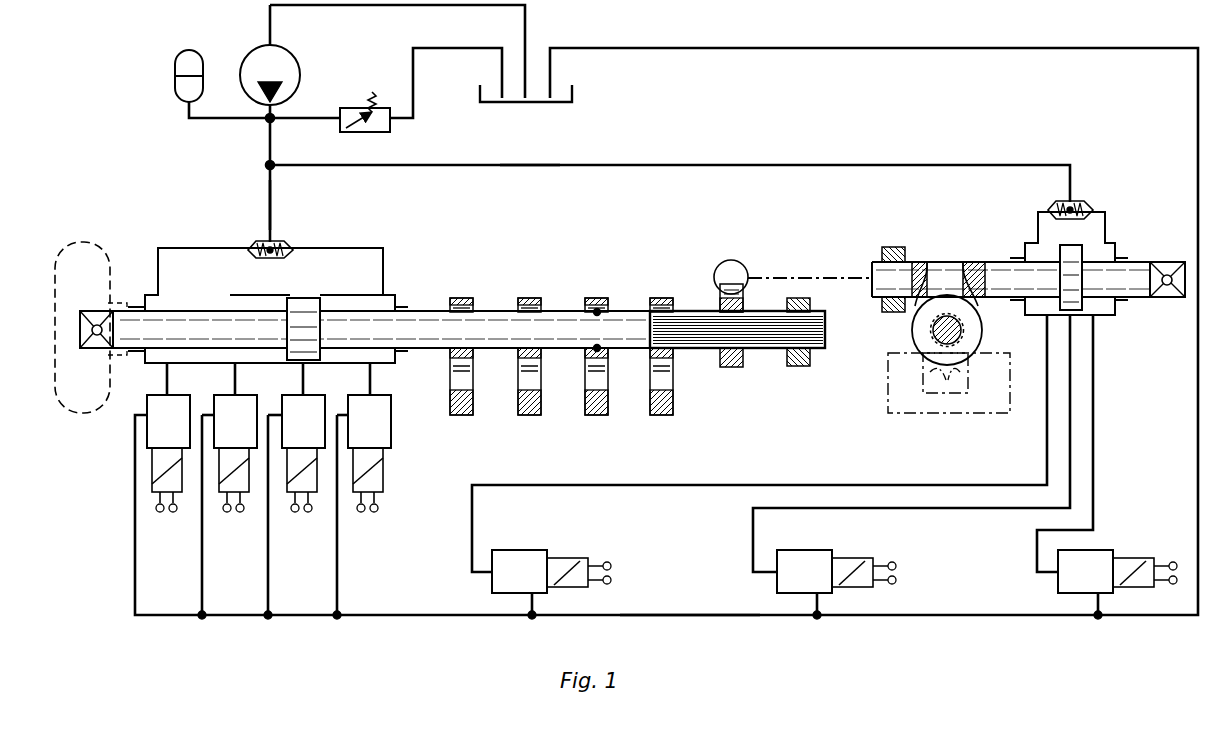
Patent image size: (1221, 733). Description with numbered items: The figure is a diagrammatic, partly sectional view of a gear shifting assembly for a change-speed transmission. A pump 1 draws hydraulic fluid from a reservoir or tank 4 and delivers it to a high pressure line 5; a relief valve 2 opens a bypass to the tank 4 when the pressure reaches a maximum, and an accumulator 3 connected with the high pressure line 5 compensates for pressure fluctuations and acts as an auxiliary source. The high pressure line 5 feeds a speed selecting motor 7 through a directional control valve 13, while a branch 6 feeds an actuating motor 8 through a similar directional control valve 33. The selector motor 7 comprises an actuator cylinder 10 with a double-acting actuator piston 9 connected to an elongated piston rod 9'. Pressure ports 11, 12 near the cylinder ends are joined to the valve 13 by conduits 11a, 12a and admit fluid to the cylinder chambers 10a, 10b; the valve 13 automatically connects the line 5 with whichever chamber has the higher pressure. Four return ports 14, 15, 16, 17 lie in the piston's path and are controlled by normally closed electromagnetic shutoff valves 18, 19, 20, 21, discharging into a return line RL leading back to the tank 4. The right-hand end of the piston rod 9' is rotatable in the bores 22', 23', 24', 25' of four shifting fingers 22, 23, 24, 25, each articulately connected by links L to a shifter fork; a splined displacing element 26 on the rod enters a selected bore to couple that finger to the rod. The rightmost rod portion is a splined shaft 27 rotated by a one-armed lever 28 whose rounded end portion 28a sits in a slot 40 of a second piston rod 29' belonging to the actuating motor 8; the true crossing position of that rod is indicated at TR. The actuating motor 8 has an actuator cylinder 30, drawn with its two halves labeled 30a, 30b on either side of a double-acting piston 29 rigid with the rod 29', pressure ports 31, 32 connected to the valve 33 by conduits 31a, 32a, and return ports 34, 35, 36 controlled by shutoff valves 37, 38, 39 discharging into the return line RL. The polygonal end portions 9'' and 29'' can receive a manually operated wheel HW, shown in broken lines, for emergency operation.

The pump 1 is at (288, 66).
The relief valve 2 is at (382, 128).
The accumulator 3 is at (172, 88).
The reservoir or tank 4 is at (572, 94).
The high pressure line 5 is at (268, 192).
The branch of the high pressure line 6 is at (504, 168).
The speed selecting motor 7 is at (150, 240).
The shifting or actuating motor 8 is at (1132, 214).
The actuator piston 9 is at (381, 312).
The piston rod 9' is at (195, 294).
The left-hand end portion of the piston rod 9'' is at (103, 316).
The actuator cylinder 10 is at (138, 362).
The cylinder chamber 10a is at (238, 300).
The cylinder chamber 10b is at (342, 300).
The pressure port 11 is at (156, 282).
The conduit 11a is at (190, 248).
The pressure port 12 is at (384, 288).
The conduit 12a is at (354, 248).
The directional control valve 13 is at (286, 243).
The return port 14 is at (165, 374).
The return port 15 is at (233, 378).
The return port 16 is at (301, 378).
The return port 17 is at (368, 378).
The electromagnetic shutoff valve 18 is at (172, 406).
The electromagnetic shutoff valve 19 is at (240, 406).
The electromagnetic shutoff valve 20 is at (310, 406).
The electromagnetic shutoff valve 21 is at (378, 406).
The shifting member or finger 22 is at (459, 396).
The bore 22' is at (448, 292).
The shifting member or finger 23 is at (528, 396).
The bore 23' is at (514, 292).
The shifting member or finger 24 is at (597, 396).
The bore 24' is at (615, 292).
The shifting member or finger 25 is at (664, 396).
The bore 25' is at (657, 290).
The coupling or displacing element 26 is at (590, 315).
The splined shaft 27 is at (772, 340).
The one-armed lever 28 is at (716, 296).
The end portion of the lever 28a is at (942, 262).
The actuator piston 29 is at (1011, 267).
The piston rod 29' is at (1130, 259).
The right-hand end portion of the piston rod 29'' is at (1167, 297).
The actuator cylinder 30 is at (1100, 320).
The housing part 30a is at (1040, 318).
The housing part 30b is at (1104, 330).
The pressure port 31 is at (1036, 234).
The conduit 31a is at (1046, 208).
The pressure port 32 is at (1106, 236).
The conduit 32a is at (1100, 208).
The directional control valve 33 is at (1082, 202).
The return port 34 is at (666, 470).
The return port 35 is at (906, 509).
The return port 36 is at (1094, 456).
The electromagnetic shutoff valve 37 is at (514, 556).
The electromagnetic shutoff valve 38 is at (800, 556).
The electromagnetic shutoff valve 39 is at (1094, 558).
The recess or slot 40 is at (972, 262).
The manually operated means HW is at (85, 236).
The true position of the piston rod TR is at (746, 265).
The links L is at (886, 384).
The return line RL is at (668, 614).